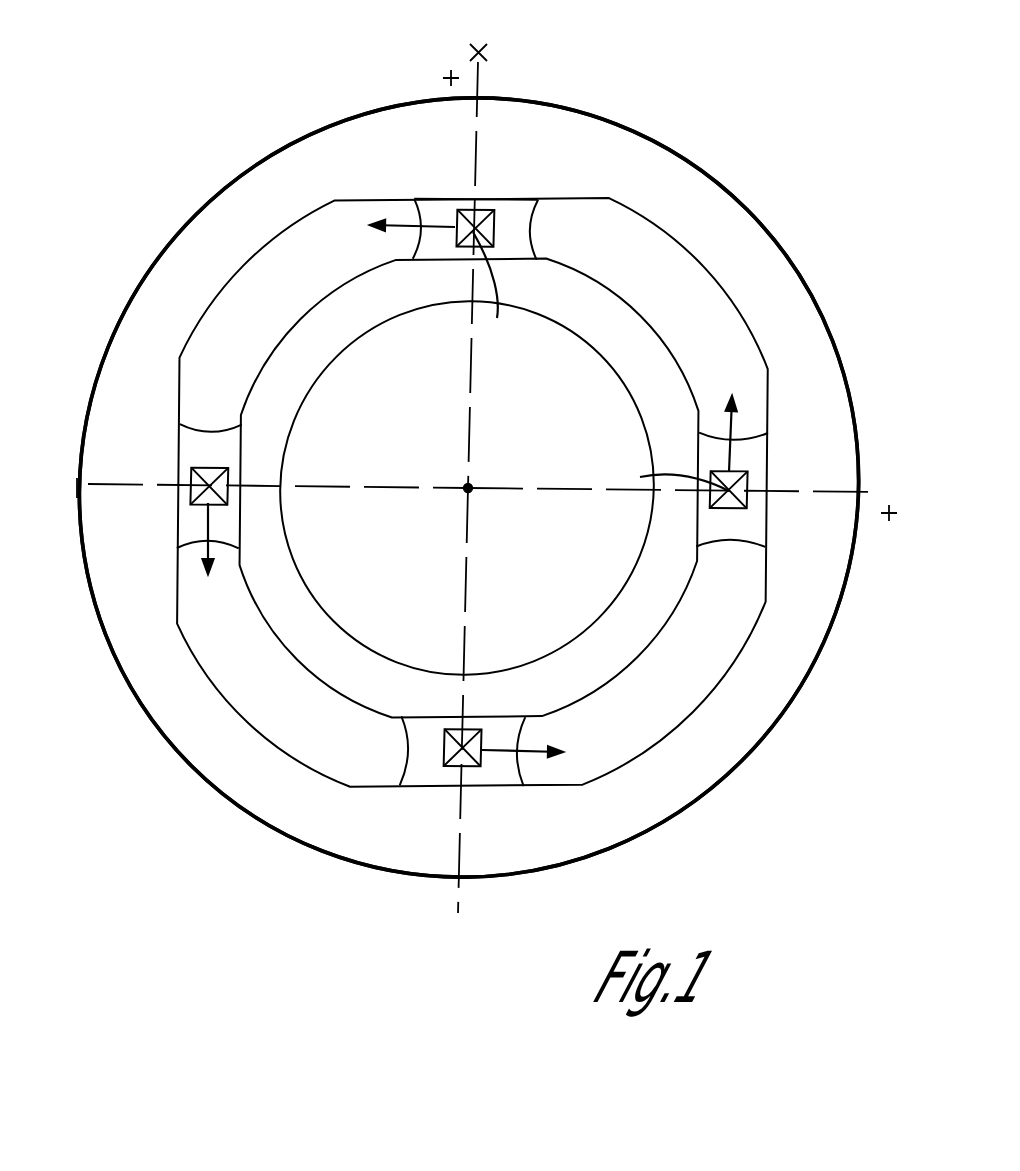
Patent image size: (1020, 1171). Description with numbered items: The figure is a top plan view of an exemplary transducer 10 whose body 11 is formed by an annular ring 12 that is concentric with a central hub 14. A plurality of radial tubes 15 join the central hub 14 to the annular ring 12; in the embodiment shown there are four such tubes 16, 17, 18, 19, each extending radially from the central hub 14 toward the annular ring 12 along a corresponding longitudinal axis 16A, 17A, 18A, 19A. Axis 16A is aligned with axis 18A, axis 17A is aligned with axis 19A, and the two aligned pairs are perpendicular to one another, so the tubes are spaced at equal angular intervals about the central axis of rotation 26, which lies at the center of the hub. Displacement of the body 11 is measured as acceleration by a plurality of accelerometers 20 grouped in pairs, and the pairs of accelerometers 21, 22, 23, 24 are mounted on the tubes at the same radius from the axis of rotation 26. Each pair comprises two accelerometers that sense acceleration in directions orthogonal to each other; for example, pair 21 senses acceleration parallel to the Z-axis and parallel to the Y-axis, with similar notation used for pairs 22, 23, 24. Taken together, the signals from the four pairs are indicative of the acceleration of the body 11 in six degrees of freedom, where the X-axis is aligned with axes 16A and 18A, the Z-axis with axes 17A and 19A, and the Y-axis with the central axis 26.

The transducer 10 is at (281, 119).
The body 11 is at (812, 218).
The annular ring 12 is at (745, 203).
The central hub 14 is at (585, 268).
The plurality of radial tubes 15 is at (394, 209).
The tube 16 is at (550, 213).
The tube 17 is at (204, 416).
The tube 18 is at (403, 737).
The tube 19 is at (714, 541).
The accelerometers 20 is at (498, 193).
The accelerometer pair 21 is at (466, 210).
The accelerometer pair 22 is at (287, 442).
The accelerometer pair 23 is at (507, 645).
The accelerometer pair 24 is at (729, 491).
The central axis 26 is at (470, 490).
The longitudinal axis 16A is at (477, 247).
The longitudinal axis 17A is at (248, 473).
The longitudinal axis 18A is at (465, 717).
The longitudinal axis 19A is at (709, 500).